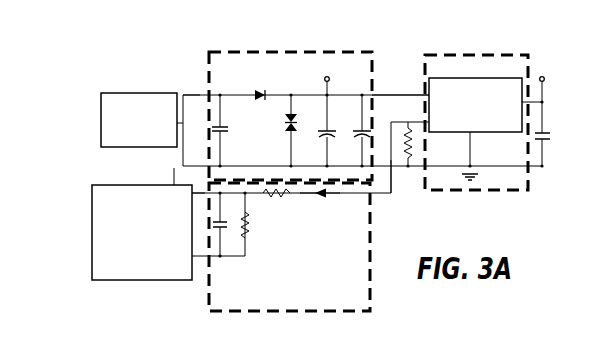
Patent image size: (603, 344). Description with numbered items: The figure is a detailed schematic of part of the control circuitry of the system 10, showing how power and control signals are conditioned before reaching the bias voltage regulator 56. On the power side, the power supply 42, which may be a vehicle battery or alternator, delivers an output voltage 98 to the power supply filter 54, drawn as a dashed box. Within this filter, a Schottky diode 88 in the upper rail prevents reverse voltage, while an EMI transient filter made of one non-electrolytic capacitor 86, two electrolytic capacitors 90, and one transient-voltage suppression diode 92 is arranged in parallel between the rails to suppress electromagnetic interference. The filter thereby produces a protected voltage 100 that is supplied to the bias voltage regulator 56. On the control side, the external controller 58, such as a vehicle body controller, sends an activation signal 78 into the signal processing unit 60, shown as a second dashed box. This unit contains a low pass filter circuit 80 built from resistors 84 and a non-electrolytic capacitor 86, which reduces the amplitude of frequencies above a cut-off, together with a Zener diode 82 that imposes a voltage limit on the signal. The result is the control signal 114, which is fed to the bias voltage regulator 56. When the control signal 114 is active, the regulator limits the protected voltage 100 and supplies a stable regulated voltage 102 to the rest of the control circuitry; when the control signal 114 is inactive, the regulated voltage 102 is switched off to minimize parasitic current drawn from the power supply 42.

The system 10 is at (593, 343).
The power supply 42 is at (176, 93).
The power supply filter 54 is at (284, 51).
The bias voltage regulator 56 is at (448, 191).
The external controller 58 is at (142, 215).
The signal processing unit 60 is at (291, 312).
The activation signal 78 is at (196, 192).
The low pass filter circuit 80 is at (331, 260).
The Zener diodes 82 is at (328, 198).
The resistors 84 is at (272, 198).
The non-electrolytic capacitor 86 is at (228, 129).
The Schottky diode 88 is at (257, 99).
The electrolytic capacitors 90 is at (364, 130).
The transient-voltage suppression diode 92 is at (290, 131).
The output voltage 98 is at (192, 93).
The protected voltage 100 is at (324, 79).
The regulated voltage 102 is at (542, 77).
The control signal 114 is at (385, 195).